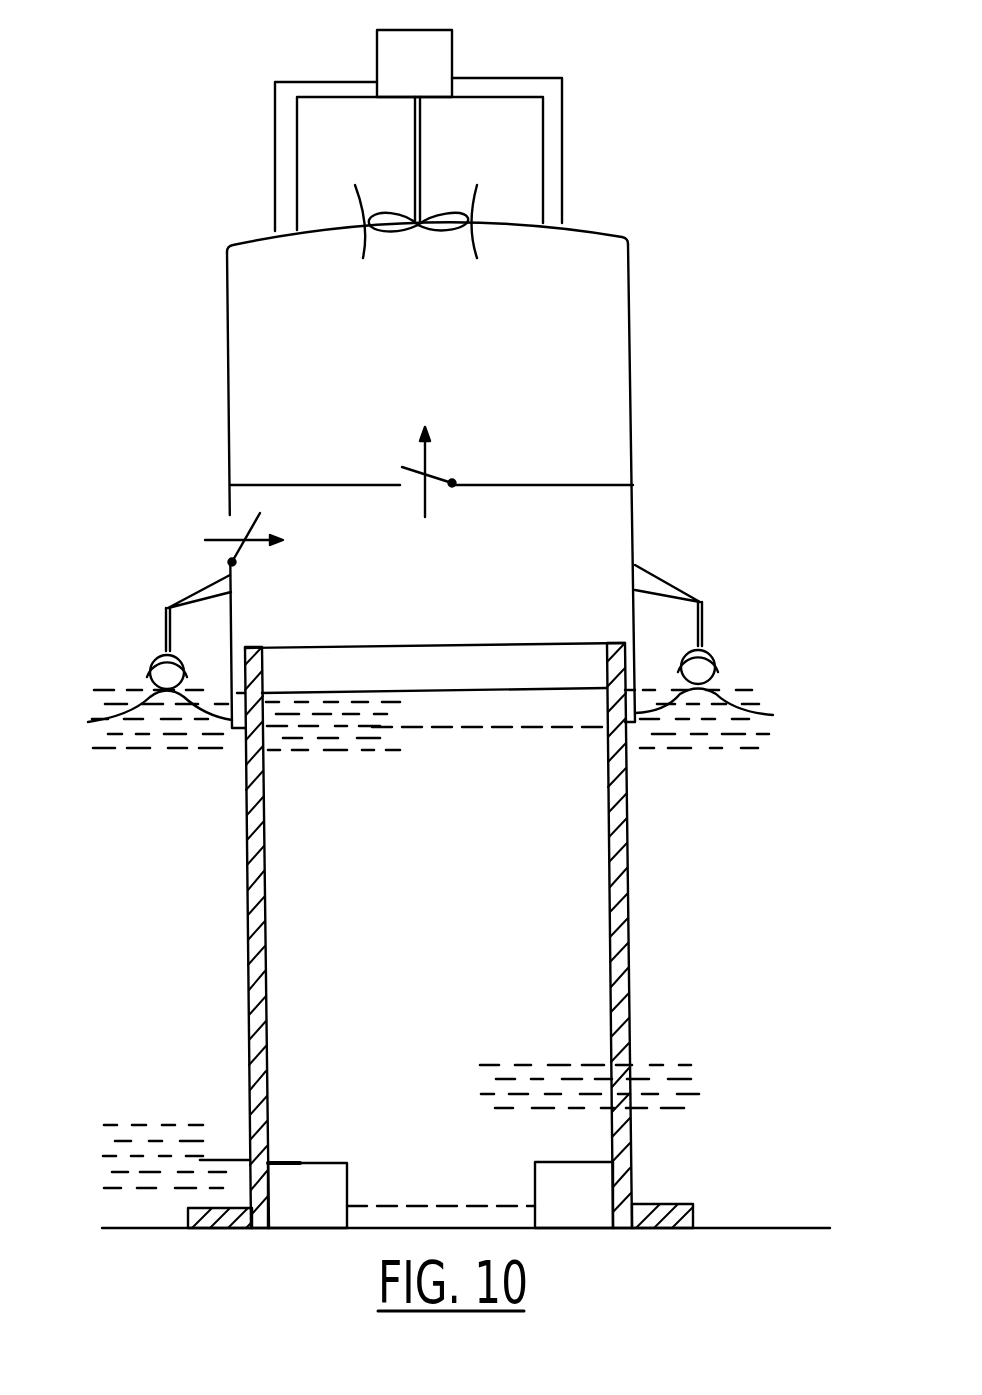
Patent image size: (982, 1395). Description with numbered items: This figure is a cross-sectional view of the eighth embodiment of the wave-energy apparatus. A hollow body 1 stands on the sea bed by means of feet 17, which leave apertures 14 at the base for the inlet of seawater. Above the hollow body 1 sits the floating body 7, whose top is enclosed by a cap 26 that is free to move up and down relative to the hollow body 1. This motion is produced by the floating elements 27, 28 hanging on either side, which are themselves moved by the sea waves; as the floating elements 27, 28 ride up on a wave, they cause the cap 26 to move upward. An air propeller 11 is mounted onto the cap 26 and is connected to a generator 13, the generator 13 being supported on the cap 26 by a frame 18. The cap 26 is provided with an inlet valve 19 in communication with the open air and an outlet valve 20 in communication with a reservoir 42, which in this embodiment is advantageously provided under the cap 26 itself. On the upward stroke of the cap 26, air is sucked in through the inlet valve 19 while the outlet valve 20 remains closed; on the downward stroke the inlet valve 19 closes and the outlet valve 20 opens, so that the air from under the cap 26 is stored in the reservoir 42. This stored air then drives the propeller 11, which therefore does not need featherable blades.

The hollow body 1 is at (225, 983).
The floating body 7 is at (658, 268).
The air propeller 11 is at (438, 212).
The generator 13 is at (392, 48).
The apertures 14 is at (333, 1183).
The feet 17 is at (257, 1187).
The frame 18 is at (288, 152).
The inlet valve 19 is at (253, 523).
The outlet valve 20 is at (437, 477).
The cap 26 is at (223, 252).
The floating element 27 is at (160, 673).
The floating element 28 is at (703, 673).
The reservoir 42 is at (592, 368).